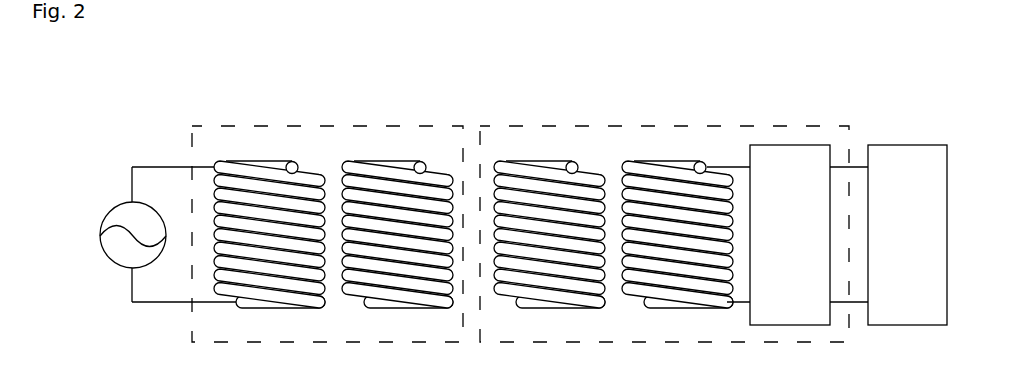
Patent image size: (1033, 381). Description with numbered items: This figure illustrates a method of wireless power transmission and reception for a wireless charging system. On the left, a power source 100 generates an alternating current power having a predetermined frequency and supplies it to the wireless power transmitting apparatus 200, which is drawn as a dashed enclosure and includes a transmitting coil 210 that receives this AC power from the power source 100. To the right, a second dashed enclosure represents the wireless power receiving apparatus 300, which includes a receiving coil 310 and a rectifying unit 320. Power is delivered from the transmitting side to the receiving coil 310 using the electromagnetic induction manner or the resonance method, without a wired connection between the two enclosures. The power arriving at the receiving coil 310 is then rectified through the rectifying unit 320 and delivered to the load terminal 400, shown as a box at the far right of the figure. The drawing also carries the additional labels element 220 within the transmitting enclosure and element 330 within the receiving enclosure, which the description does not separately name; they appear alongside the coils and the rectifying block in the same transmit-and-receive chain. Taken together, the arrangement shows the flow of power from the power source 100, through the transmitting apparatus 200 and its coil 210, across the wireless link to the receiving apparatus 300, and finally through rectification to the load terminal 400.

The power source 100 is at (108, 204).
The wireless power transmitting apparatus 200 is at (202, 125).
The transmitting coil 210 is at (277, 177).
The second transmitting coil 220 is at (402, 175).
The wireless power receiving apparatus 300 is at (487, 124).
The receiving coil 310 is at (553, 175).
The rectifying unit 320 is at (678, 175).
The rectifying unit 330 is at (795, 143).
The load terminal 400 is at (910, 143).